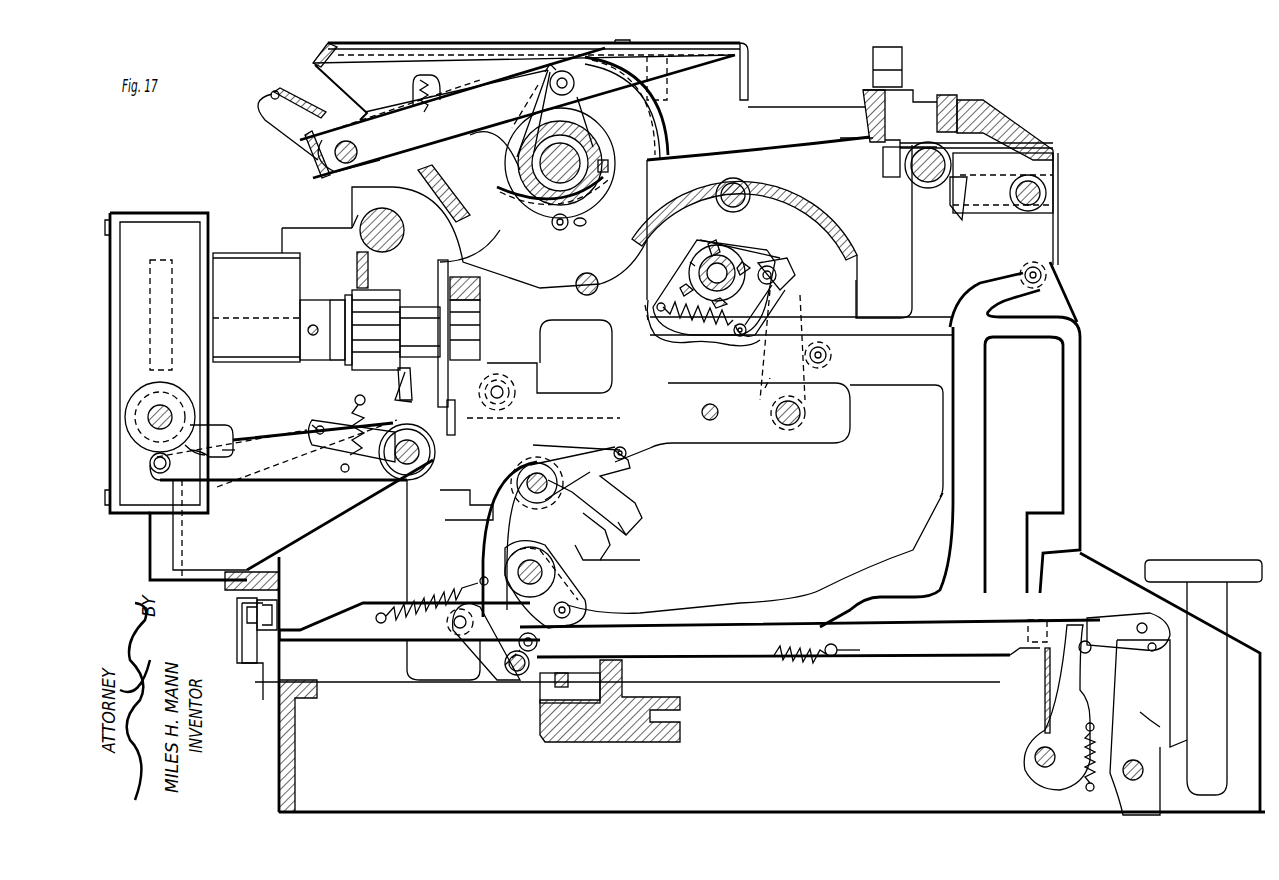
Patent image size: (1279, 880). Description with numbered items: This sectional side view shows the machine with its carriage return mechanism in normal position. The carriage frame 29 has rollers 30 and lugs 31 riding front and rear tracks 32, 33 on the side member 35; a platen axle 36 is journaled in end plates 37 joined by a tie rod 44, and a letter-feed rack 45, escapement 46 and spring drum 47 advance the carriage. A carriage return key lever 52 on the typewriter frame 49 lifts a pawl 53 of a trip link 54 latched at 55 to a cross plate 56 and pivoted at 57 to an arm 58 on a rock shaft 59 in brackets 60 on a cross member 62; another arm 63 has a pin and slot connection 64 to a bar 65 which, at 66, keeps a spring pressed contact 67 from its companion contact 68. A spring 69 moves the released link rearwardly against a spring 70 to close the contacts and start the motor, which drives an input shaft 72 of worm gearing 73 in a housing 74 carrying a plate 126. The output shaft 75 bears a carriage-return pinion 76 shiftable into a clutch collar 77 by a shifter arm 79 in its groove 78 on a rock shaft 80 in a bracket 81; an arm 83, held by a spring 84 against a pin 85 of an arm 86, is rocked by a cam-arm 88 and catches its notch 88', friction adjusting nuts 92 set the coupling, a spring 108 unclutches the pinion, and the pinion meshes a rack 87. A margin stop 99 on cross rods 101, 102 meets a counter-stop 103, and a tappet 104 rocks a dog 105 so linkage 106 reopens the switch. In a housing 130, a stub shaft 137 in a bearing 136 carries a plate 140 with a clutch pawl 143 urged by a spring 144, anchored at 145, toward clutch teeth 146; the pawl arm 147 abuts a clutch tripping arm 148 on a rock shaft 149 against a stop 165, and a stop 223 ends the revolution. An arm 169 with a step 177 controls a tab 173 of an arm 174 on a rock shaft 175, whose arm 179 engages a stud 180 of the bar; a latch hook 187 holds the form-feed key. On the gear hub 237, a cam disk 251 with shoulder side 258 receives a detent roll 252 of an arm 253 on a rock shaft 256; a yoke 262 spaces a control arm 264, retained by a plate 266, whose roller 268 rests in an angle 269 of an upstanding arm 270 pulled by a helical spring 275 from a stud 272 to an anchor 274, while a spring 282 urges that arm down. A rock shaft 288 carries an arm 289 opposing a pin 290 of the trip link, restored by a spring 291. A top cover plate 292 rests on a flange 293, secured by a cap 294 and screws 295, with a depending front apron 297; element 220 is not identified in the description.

The carriage frame 29 is at (795, 107).
The rollers 30 is at (948, 100).
The lugs 31 is at (404, 222).
The front track 32 is at (980, 100).
The rear track 33 is at (358, 215).
The side member 35 is at (912, 260).
The platen axle 36 is at (588, 145).
The carriage end plates 37 is at (330, 85).
The tie rod 44 is at (592, 298).
The letter-feed rack 45 is at (478, 280).
The escapement 46 is at (459, 391).
The spring drum 47 is at (442, 264).
The typewriter frame 49 is at (297, 735).
The carriage return key lever 52 is at (1155, 705).
The pawl 53 is at (1102, 618).
The trip link 54 is at (988, 655).
The latching engagement 55 is at (1038, 655).
The cross plate 56 is at (1045, 690).
The pivot 57 is at (540, 642).
The arm 58 is at (462, 627).
The transverse rock shaft 59 is at (548, 558).
The brackets 60 is at (595, 585).
The cross member 62 is at (630, 742).
The arm 63 is at (505, 665).
The pin and slot pivotal connection 64 is at (520, 672).
The bar 65 is at (385, 640).
The contact controlling portion 66 is at (275, 625).
The spring pressed contact 67 is at (278, 590).
The companion contact 68 is at (237, 605).
The spring 69 is at (788, 672).
The spring 70 is at (440, 592).
The input shaft 72 is at (190, 407).
The worm and worm wheel gearing 73 is at (148, 385).
The housing 74 is at (145, 213).
The output shaft 75 is at (262, 318).
The carriage-return pinion 76 is at (352, 372).
The clutch collar 77 is at (350, 290).
The groove 78 is at (408, 307).
The shifter arm 79 is at (405, 388).
The rock shaft 80 is at (404, 480).
The bracket 81 is at (360, 518).
The arm 83 is at (290, 480).
The spring 84 is at (342, 420).
The pin 85 is at (312, 425).
The arm 86 is at (378, 462).
The rack 87 is at (352, 265).
The cam-arm 88 is at (201, 460).
The notch 88' is at (237, 463).
The friction adjusting nuts 92 is at (150, 460).
The margin stop 99 is at (1003, 218).
The cross rod 101 is at (915, 180).
The cross rod 102 is at (1042, 190).
The counter-stop 103 is at (885, 155).
The tappet 104 is at (950, 143).
The dog 105 is at (955, 220).
The linkage 106 is at (910, 548).
The spring 108 is at (345, 300).
The plate 126 is at (105, 213).
The housing 130 is at (785, 185).
The bearing 136 is at (718, 252).
The stub shaft 137 is at (700, 255).
The plate 140 is at (762, 255).
The clutch pawl 143 is at (745, 340).
The spring 144 is at (702, 335).
The anchor 145 is at (652, 345).
The clutch teeth 146 is at (690, 262).
The arm 147 is at (790, 275).
The clutch tripping arm 148 is at (795, 290).
The clutch tripping rock shaft 149 is at (802, 410).
The stop 165 is at (765, 388).
The arm 169 is at (640, 560).
The lateral tab 173 is at (618, 522).
The arm 174 is at (630, 500).
The transverse rock shaft 175 is at (550, 478).
The step 177 is at (620, 553).
The arm 179 is at (485, 540).
The stud 180 is at (462, 650).
The latch hook 187 is at (462, 490).
The pin 220 is at (628, 455).
The stop 223 is at (800, 322).
The hub 237 is at (510, 112).
The cam disk 251 is at (660, 96).
The detent roll 252 is at (560, 230).
The arm 253 is at (515, 238).
The transverse rock shaft 256 is at (318, 172).
The shoulder forming side 258 is at (585, 226).
The yoke 262 is at (305, 158).
The control arm 264 is at (458, 100).
The plate 266 is at (420, 118).
The roller 268 is at (578, 85).
The angle 269 is at (546, 72).
The upstanding arm 270 is at (540, 85).
The stud 272 is at (612, 158).
The anchor 274 is at (278, 92).
The helical spring 275 is at (273, 128).
The spring 282 is at (413, 92).
The transverse rock shaft 288 is at (1035, 760).
The arm 289 is at (1067, 625).
The pin 290 is at (1085, 640).
The spring 291 is at (1085, 765).
The top cover plate 292 is at (318, 58).
The flange 293 is at (440, 64).
The cap 294 is at (480, 44).
The screws 295 is at (372, 42).
The depending front apron 297 is at (700, 158).